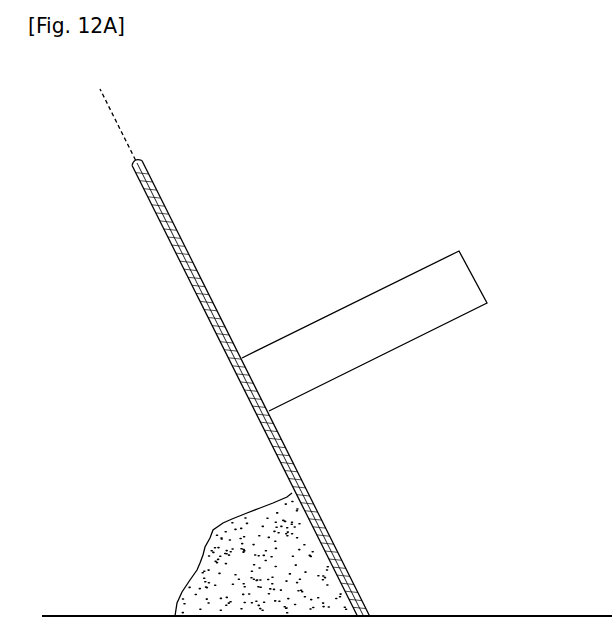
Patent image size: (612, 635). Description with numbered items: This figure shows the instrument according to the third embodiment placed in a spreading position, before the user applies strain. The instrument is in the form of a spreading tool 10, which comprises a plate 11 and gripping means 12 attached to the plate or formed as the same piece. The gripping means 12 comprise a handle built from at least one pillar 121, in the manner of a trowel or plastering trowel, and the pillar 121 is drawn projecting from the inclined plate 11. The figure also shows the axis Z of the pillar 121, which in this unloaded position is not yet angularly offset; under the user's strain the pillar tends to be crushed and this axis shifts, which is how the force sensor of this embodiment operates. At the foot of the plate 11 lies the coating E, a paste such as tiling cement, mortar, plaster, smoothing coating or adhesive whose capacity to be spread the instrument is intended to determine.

The spreading tool 10 is at (302, 337).
The plate 11 is at (146, 172).
The gripping means 12 is at (382, 291).
The pillar 121 is at (382, 340).
The axis Z is at (109, 109).
The coating E is at (221, 574).